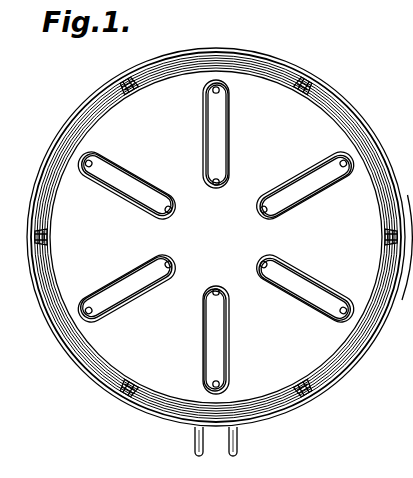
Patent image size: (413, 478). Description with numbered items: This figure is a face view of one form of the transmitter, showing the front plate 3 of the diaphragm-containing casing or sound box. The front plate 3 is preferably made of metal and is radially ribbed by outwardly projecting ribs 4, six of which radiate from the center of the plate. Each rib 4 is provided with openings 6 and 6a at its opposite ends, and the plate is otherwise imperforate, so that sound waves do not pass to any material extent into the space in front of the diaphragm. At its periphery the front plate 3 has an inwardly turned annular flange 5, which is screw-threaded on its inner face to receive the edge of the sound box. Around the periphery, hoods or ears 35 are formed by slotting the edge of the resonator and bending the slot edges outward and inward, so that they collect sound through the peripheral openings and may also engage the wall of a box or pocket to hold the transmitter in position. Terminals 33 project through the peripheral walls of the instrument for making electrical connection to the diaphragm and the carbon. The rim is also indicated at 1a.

The outer rim 1a is at (359, 117).
The front plate 3 is at (216, 237).
The ribs 4 is at (150, 198).
The annular flange 5 is at (354, 333).
The opening 6 is at (173, 211).
The opening 6a is at (345, 167).
The terminals 33 is at (236, 462).
The hood or ear 35 is at (132, 86).